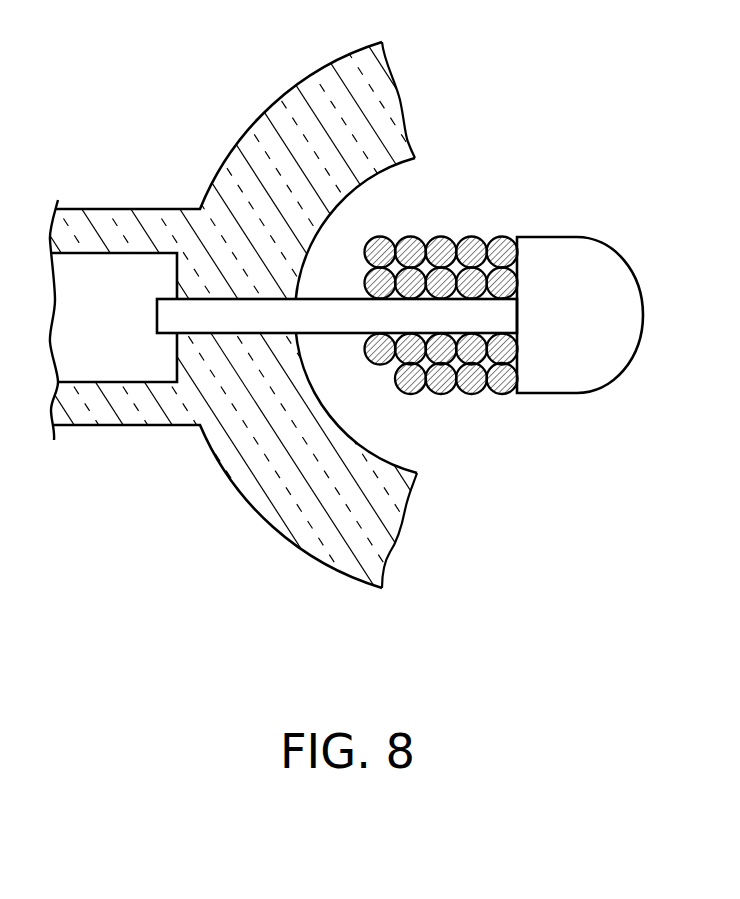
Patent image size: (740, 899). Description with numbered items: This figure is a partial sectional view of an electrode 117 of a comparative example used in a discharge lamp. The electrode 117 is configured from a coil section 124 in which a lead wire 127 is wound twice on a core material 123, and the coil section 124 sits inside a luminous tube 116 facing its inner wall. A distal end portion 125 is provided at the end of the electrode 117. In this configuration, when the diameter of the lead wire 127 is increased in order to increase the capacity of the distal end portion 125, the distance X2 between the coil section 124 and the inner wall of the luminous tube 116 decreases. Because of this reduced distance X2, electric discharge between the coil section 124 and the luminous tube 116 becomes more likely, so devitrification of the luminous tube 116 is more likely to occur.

The luminous tube 116 is at (310, 92).
The electrode 117 is at (504, 288).
The core material 123 is at (337, 335).
The coil section 124 is at (441, 307).
The distal end portion 125 is at (563, 388).
The lead wire 127 is at (474, 392).
The distance X2 is at (342, 210).